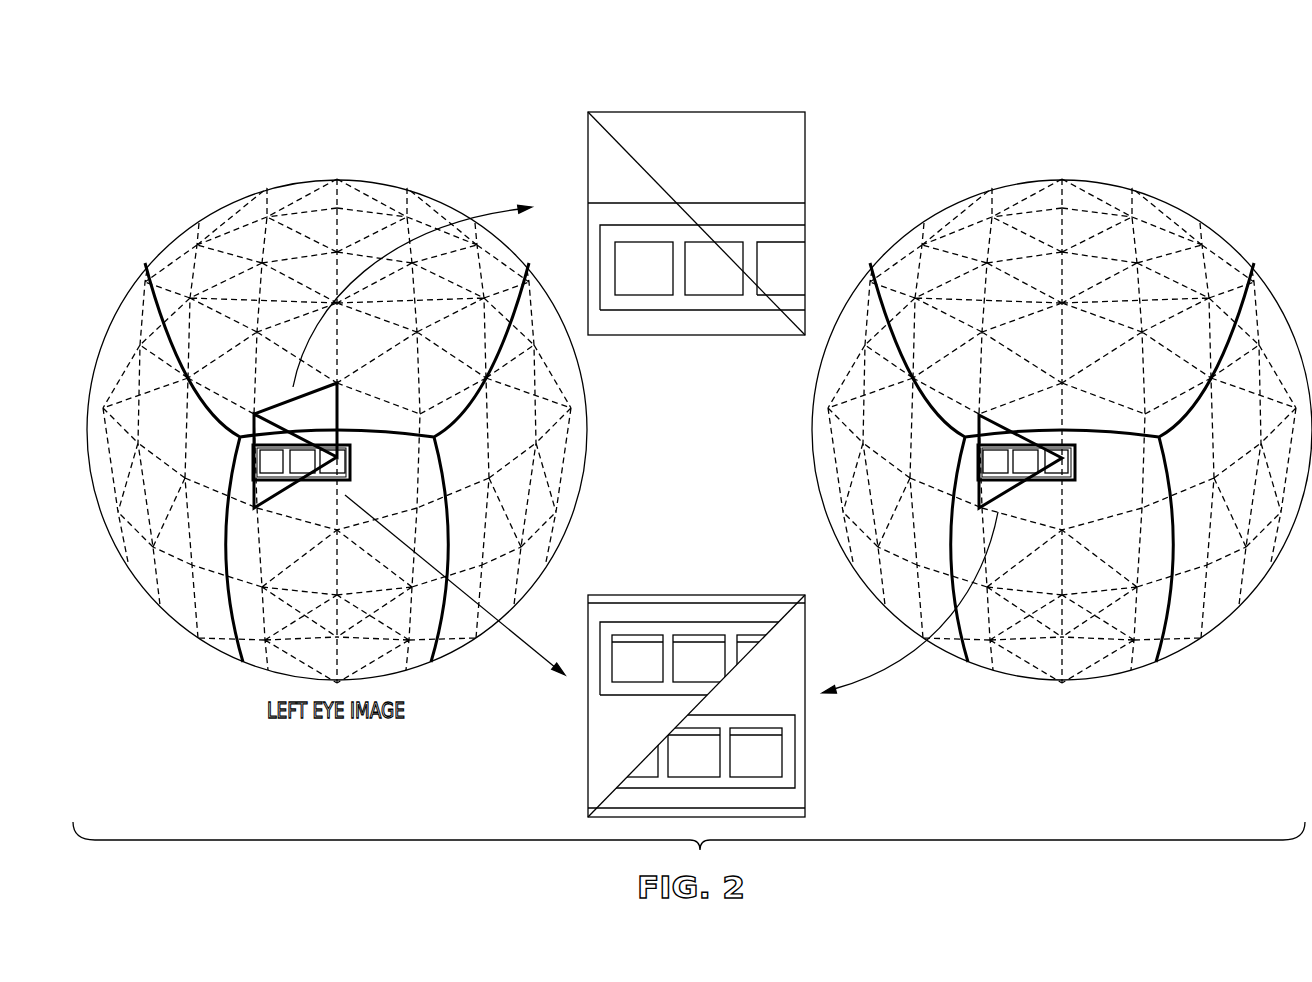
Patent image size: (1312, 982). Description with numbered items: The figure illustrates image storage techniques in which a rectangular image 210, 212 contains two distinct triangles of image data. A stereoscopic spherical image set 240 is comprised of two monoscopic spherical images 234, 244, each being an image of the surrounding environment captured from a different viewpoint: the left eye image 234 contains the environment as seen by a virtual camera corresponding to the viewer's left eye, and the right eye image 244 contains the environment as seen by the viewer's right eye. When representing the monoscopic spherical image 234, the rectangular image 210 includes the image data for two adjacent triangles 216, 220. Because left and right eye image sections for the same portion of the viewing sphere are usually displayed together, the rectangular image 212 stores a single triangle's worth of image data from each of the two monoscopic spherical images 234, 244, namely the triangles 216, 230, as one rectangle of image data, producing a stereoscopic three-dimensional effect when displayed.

The rectangular image 210 is at (694, 90).
The rectangular image 212 is at (694, 575).
The triangle 216 is at (278, 496).
The triangle 220 is at (339, 418).
The triangle 230 is at (1003, 495).
The monoscopic spherical image 234 is at (141, 627).
The stereoscopic spherical image set 240 is at (1210, 82).
The monoscopic spherical image 244 is at (1244, 661).